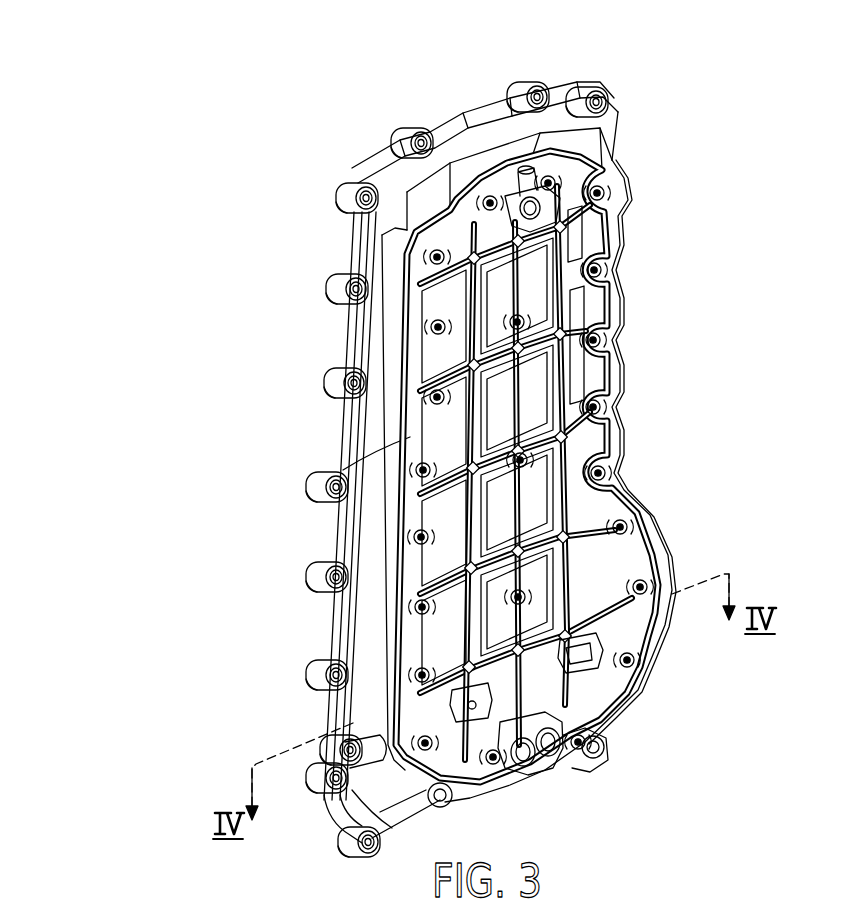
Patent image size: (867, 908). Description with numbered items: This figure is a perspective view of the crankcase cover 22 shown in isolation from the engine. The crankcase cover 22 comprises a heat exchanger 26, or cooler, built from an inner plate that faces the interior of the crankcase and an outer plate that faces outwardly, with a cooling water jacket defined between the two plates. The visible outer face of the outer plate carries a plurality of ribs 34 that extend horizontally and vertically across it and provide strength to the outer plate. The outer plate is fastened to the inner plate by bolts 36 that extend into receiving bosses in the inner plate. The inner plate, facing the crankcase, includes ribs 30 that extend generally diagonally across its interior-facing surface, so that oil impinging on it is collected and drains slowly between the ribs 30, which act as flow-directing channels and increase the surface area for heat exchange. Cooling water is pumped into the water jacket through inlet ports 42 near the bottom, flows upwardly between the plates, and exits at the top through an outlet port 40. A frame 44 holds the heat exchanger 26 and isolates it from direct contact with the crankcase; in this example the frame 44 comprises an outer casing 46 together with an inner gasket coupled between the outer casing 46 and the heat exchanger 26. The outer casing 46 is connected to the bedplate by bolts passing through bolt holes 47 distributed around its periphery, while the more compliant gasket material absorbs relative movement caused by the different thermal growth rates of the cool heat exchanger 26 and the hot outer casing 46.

The crankcase cover 22 is at (412, 42).
The heat exchanger 26 is at (426, 560).
The ribs 30 is at (608, 553).
The ribs 34 is at (596, 487).
The bolts 36 is at (598, 403).
The outlet port 40 is at (565, 213).
The inlet ports 42 is at (533, 765).
The frame 44 is at (360, 690).
The outer casing 46 is at (360, 607).
The bolt holes 47 is at (604, 102).